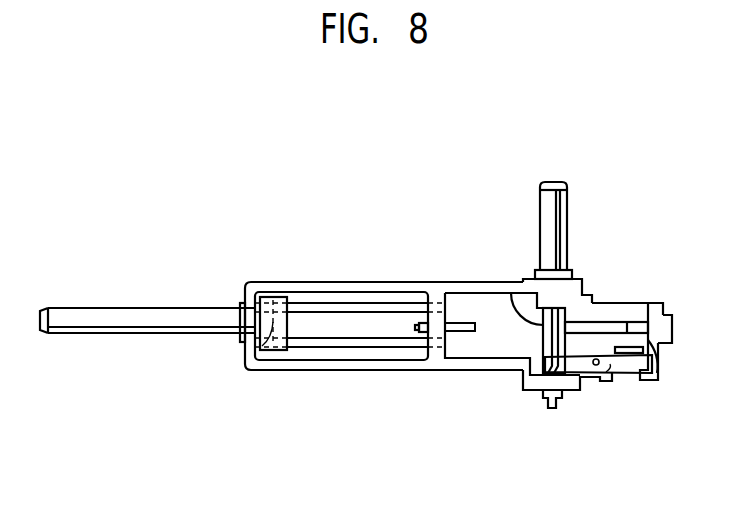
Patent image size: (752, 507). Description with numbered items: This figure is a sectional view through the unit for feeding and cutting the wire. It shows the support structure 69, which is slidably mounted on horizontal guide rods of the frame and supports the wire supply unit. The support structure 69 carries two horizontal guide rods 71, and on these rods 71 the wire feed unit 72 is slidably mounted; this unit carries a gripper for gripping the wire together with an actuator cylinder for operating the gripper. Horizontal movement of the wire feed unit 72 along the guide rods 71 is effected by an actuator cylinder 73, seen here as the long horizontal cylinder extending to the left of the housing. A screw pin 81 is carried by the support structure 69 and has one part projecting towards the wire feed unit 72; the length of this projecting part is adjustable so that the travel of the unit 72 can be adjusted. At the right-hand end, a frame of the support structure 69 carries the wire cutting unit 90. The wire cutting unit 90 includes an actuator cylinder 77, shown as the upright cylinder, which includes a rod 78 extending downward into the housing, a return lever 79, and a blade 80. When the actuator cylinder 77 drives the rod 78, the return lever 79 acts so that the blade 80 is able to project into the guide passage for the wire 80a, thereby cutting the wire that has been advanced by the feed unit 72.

The support structure 69 is at (279, 377).
The horizontal guide rods 71 is at (325, 310).
The wire feed unit 72 is at (255, 357).
The actuator cylinder 73 is at (142, 320).
The actuator cylinder 77 is at (560, 218).
The rod 78 is at (514, 300).
The return lever 79 is at (602, 372).
The blade 80 is at (658, 376).
The guide passage for the wire 80a is at (664, 310).
The screw pin 81 is at (467, 332).
The wire cutting unit 90 is at (604, 284).